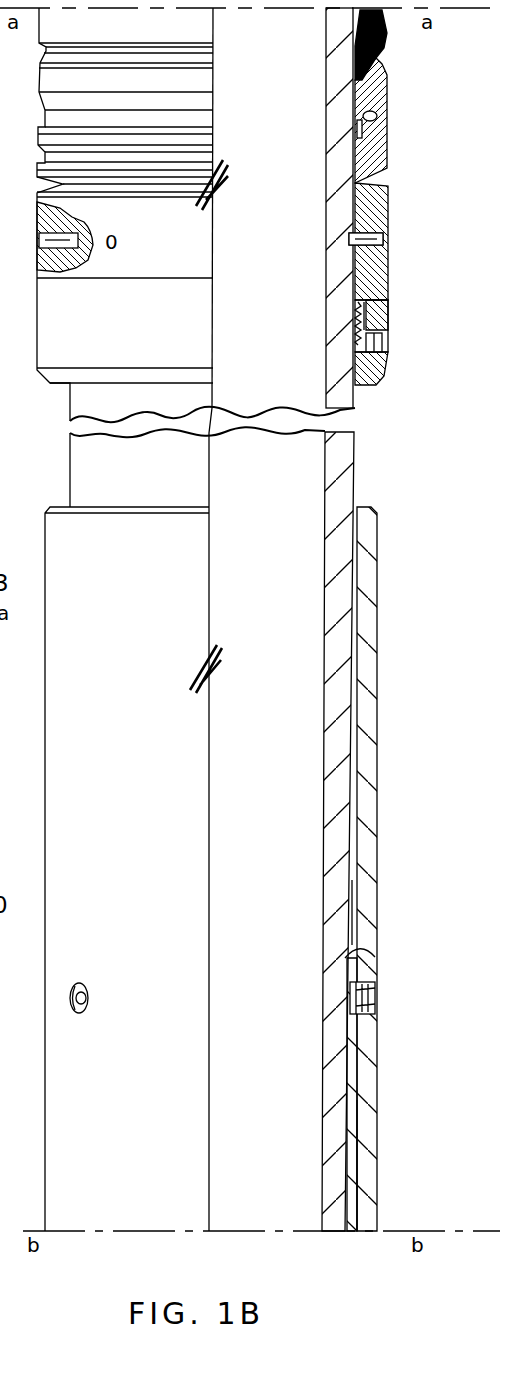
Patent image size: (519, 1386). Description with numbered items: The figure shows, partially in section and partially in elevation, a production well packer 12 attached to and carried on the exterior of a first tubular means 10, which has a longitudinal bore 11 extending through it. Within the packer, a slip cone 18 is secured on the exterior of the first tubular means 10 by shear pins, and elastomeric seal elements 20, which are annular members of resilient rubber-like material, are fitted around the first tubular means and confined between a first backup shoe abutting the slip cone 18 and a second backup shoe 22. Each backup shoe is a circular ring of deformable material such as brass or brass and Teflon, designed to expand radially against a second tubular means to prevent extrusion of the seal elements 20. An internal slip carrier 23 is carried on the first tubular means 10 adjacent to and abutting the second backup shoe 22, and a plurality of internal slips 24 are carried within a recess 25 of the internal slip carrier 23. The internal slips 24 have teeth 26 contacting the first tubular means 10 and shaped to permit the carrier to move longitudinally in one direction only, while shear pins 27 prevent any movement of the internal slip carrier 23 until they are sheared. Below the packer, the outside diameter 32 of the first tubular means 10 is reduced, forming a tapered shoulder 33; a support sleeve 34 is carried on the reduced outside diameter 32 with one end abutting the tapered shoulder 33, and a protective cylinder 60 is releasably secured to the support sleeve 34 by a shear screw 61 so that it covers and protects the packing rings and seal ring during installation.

The first tubular means 10 is at (342, 460).
The longitudinal bore 11 is at (251, 923).
The production well packer 12 is at (395, 87).
The slip cone 18 is at (12, 656).
The elastomeric seal elements 20 is at (375, 22).
The second backup shoe 22 is at (387, 163).
The internal slip carrier 23 is at (376, 218).
The internal slips 24 is at (372, 386).
The recess 25 is at (378, 343).
The teeth 26 is at (355, 328).
The shear pins 27 is at (47, 247).
The outside diameter 32 is at (349, 1063).
The tapered shoulder 33 is at (375, 946).
The support sleeve 34 is at (350, 1122).
The protective cylinder 60 is at (370, 575).
The shear screw 61 is at (376, 998).